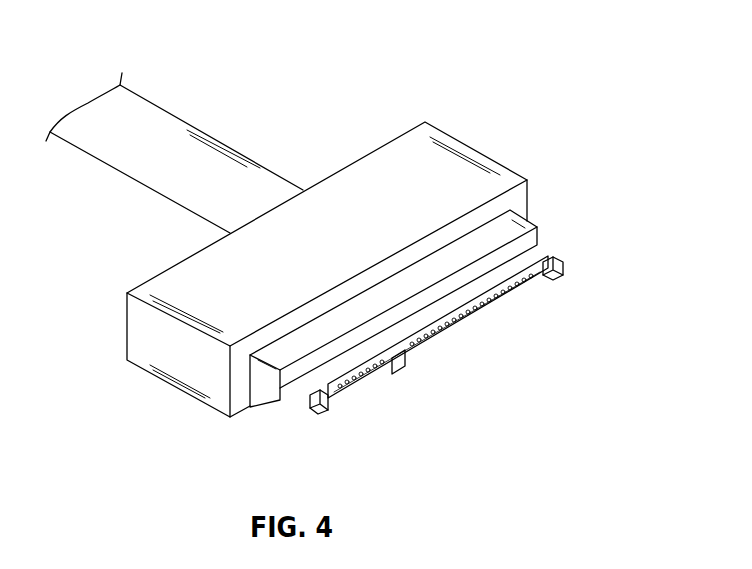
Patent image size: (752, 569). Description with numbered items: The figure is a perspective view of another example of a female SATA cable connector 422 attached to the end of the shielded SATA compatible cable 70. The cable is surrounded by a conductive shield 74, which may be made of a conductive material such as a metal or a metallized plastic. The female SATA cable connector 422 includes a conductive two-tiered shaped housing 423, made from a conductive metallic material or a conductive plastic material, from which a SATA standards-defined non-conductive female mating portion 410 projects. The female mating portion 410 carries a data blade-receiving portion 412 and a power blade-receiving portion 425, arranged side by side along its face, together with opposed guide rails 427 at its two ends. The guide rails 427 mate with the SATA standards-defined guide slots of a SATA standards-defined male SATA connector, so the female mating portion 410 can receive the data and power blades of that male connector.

The SATA compatible cable 70 is at (153, 127).
The conductive shield 74 is at (118, 172).
The female SATA cable connector 422 is at (410, 80).
The conductive two-tiered shaped housing 423 is at (430, 118).
The non-conductive female mating portion 410 is at (290, 404).
The data blade-receiving portion 412 is at (388, 378).
The power blade-receiving portion 425 is at (520, 298).
The opposed guide rails 427 is at (563, 267).